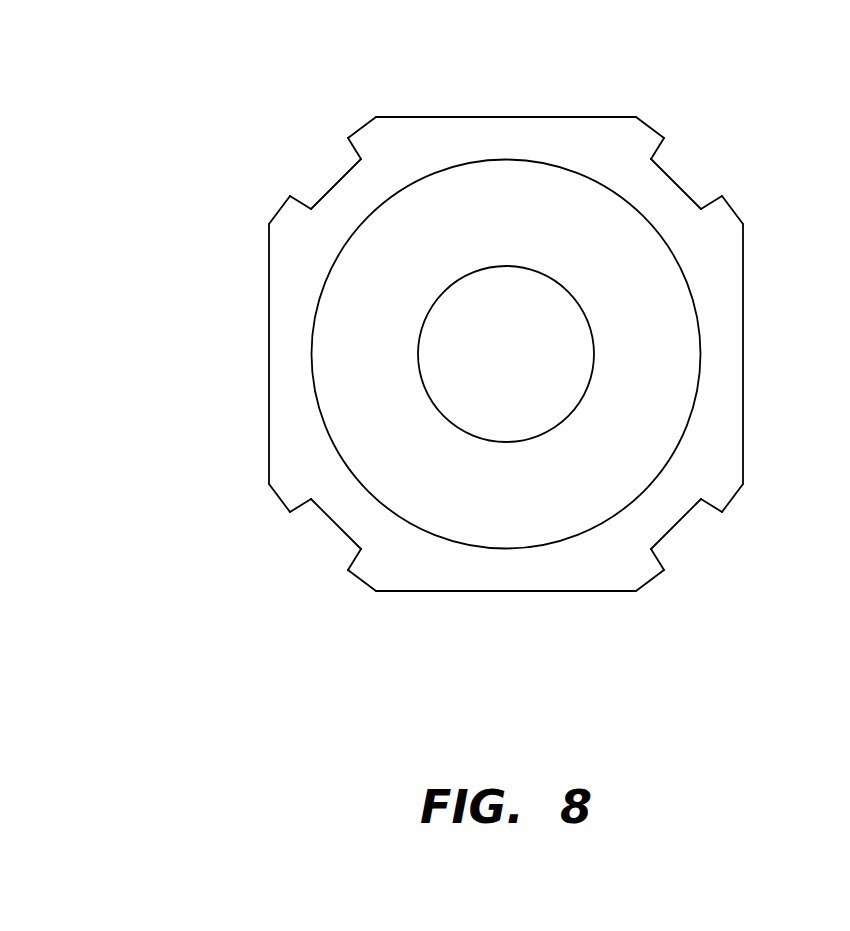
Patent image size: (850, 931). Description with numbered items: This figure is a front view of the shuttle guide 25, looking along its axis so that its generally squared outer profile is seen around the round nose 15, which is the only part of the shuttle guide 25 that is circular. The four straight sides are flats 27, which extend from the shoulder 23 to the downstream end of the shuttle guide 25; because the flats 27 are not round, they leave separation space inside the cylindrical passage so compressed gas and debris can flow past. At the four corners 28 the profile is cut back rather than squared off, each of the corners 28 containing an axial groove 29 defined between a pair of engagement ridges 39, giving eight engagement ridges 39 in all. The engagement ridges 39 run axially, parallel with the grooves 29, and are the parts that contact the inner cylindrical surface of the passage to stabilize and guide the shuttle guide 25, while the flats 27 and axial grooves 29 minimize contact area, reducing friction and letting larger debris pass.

The shuttle guide 25 is at (436, 353).
The shoulder 23 is at (505, 353).
The flats 27 is at (507, 117).
The engagement ridges 39 is at (361, 128).
The axial grooves 29 is at (345, 176).
The corners 28 is at (318, 177).
The nose 15 is at (699, 387).